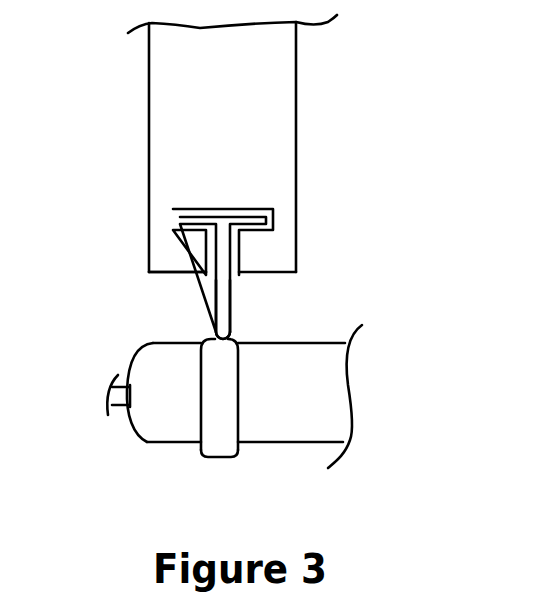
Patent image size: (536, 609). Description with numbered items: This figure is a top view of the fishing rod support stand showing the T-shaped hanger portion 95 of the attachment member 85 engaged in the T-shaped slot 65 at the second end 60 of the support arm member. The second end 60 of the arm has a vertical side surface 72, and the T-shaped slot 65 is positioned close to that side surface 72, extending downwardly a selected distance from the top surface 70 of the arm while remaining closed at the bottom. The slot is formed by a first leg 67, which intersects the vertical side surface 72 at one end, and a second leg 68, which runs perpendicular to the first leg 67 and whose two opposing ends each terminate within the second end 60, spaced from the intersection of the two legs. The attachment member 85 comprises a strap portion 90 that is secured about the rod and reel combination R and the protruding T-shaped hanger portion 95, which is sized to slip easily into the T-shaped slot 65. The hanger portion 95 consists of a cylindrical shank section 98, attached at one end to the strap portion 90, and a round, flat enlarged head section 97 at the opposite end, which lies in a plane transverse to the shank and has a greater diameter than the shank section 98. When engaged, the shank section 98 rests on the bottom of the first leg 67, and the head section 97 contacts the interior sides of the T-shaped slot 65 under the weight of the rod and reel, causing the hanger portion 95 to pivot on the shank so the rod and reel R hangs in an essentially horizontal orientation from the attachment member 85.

The second end of the support arm member 60 is at (306, 71).
The top surface 70 is at (257, 133).
The vertical side surface 72 is at (172, 273).
The second leg of the T-shaped slot 68 is at (203, 203).
The head section 97 is at (247, 222).
The T-shaped slot 65 is at (286, 214).
The first leg of the T-shaped slot 67 is at (252, 250).
The T-shaped hanger portion 95 is at (250, 293).
The shank section 98 is at (218, 322).
The attachment member 85 is at (260, 385).
The reservoir R is at (167, 410).
The strap portion 90 is at (218, 428).